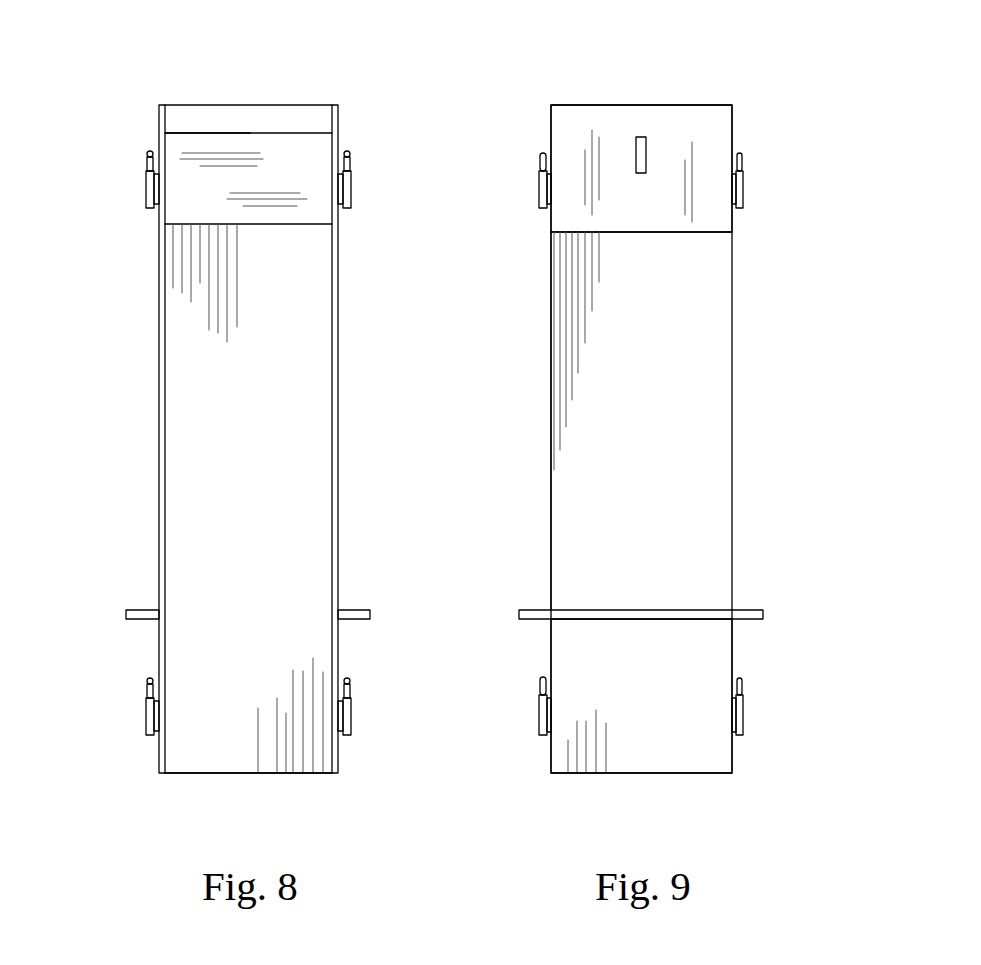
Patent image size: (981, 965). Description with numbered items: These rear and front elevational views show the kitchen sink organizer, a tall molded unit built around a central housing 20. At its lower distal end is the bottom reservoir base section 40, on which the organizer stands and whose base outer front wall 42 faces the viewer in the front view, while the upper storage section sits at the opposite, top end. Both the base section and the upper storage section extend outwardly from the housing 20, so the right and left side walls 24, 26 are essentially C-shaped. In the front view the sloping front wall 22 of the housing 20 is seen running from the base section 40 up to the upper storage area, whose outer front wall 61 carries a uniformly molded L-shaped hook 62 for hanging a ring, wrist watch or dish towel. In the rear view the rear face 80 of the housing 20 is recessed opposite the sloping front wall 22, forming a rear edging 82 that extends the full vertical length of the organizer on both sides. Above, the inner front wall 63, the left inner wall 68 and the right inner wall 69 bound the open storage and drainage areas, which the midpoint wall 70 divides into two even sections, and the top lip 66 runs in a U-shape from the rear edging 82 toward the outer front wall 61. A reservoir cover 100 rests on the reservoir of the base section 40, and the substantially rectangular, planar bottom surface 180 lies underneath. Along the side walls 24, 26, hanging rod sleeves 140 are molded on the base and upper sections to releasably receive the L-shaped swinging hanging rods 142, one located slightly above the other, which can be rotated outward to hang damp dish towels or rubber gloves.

In FIG. 9, the central housing 20 is at (791, 430).
In FIG. 9, the front wall 22 is at (660, 467).
In FIG. 8, the right side wall 24 is at (131, 478).
In FIG. 9, the right side wall 24 is at (753, 345).
In FIG. 8, the left side wall 26 is at (359, 421).
In FIG. 9, the left side wall 26 is at (538, 462).
In FIG. 9, the bottom reservoir base section 40 is at (810, 708).
In FIG. 9, the base outer front wall 42 is at (662, 698).
In FIG. 9, the outer front wall 61 is at (655, 219).
In FIG. 9, the L-shaped hook 62 is at (643, 136).
In FIG. 8, the inner front wall 63 is at (270, 118).
In FIG. 9, the top lip 66 is at (768, 106).
In FIG. 8, the left inner wall 68 is at (320, 213).
In FIG. 8, the right inner wall 69 is at (179, 143).
In FIG. 8, the midpoint wall 70 is at (310, 178).
In FIG. 8, the rear face 80 is at (262, 466).
In FIG. 8, the rear edging 82 is at (163, 387).
In FIG. 8, the reservoir cover 100 is at (353, 596).
In FIG. 9, the reservoir cover 100 is at (745, 596).
In FIG. 8, the hanging rod sleeve 140 is at (146, 188).
In FIG. 9, the hanging rod sleeve 140 is at (540, 190).
In FIG. 8, the swinging hanging rod 142 is at (147, 158).
In FIG. 9, the swinging hanging rod 142 is at (540, 158).
In FIG. 8, the bottom surface 180 is at (212, 789).